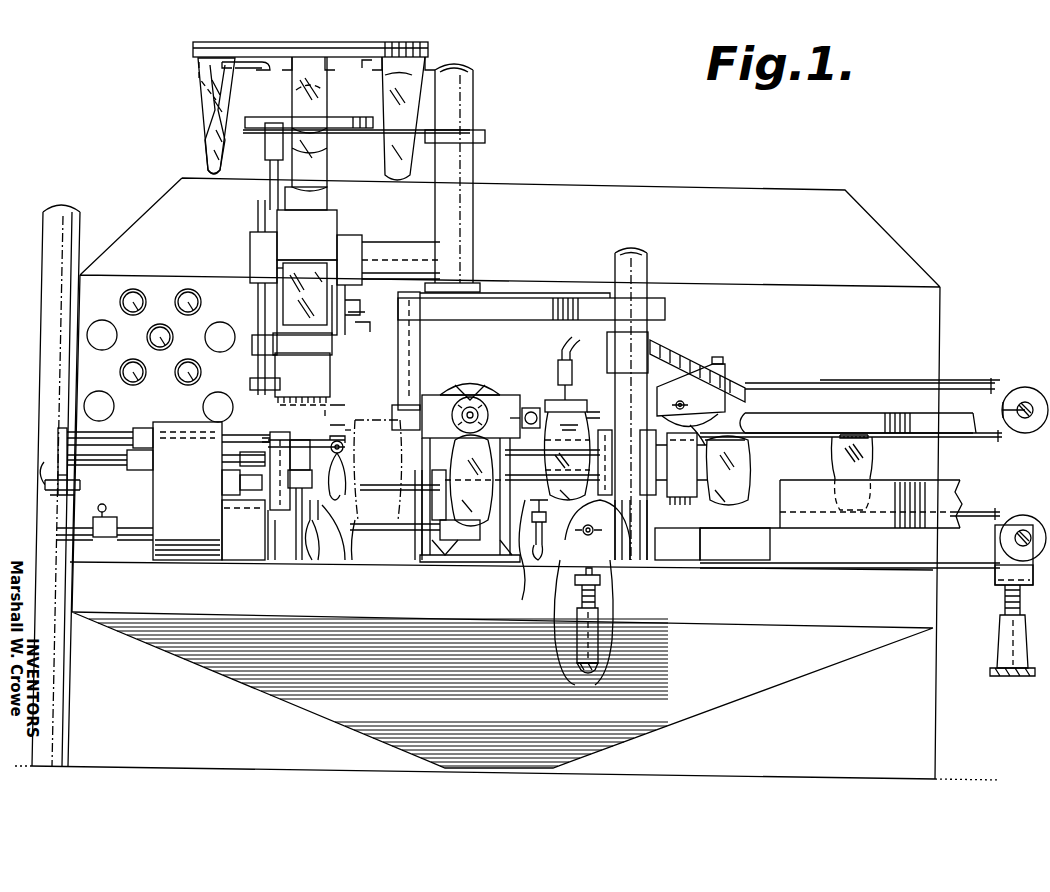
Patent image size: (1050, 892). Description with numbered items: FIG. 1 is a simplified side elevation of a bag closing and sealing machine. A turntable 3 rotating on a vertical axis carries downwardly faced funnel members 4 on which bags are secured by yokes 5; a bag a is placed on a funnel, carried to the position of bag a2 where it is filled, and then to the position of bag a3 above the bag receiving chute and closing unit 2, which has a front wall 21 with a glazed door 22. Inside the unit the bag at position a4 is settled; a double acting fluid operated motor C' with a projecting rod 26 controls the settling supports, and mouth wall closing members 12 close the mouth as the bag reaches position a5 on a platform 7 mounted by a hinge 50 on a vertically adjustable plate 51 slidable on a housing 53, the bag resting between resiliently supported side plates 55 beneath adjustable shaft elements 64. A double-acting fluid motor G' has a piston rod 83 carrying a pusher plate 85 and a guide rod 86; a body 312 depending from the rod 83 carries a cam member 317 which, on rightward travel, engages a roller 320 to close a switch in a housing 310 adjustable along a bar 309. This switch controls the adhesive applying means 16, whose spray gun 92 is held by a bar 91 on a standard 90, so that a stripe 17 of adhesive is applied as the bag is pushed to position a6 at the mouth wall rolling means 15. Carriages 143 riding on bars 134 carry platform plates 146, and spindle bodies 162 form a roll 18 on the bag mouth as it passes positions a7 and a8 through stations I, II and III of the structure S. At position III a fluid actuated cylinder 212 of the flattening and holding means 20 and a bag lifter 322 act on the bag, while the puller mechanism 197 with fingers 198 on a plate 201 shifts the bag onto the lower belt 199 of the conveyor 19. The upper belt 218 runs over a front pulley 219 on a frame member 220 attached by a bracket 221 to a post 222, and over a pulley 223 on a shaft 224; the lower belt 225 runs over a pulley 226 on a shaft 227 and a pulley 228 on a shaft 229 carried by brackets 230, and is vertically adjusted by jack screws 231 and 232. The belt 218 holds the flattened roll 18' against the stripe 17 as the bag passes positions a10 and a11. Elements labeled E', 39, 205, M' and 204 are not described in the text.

The turntable 3 is at (345, 46).
The yokes 5 is at (233, 63).
The funnel members 4 is at (198, 78).
The bag a is at (205, 108).
The filled bag a3 is at (312, 122).
The bag a2 is at (395, 122).
The bag receiving chute and closing unit 2 is at (290, 216).
The front wall 21 is at (322, 228).
The glazed door 22 is at (318, 272).
The bracket E' is at (254, 297).
The bag a4 is at (283, 268).
The double acting fluid operated motor C' is at (388, 260).
The lower block 39 is at (262, 298).
The projecting rod 26 is at (358, 318).
The mouth wall closing members 12 is at (297, 400).
The bag a5 is at (345, 405).
The rightwardly extending bar 91 is at (342, 415).
The housing 53 is at (178, 555).
The guide rod 86 is at (118, 432).
The body 312 is at (58, 452).
The piston rod 83 is at (112, 472).
The cam member 317 is at (45, 482).
The roller 320 is at (104, 508).
The housing 310 is at (82, 552).
The bar 309 is at (128, 538).
The pusher plate 85 is at (230, 455).
The double-acting fluid motor G' is at (217, 484).
The side plates 55 is at (230, 512).
The shaft elements 64 is at (258, 438).
The vertically adjustable plate 51 is at (268, 545).
The hinge 50 is at (290, 560).
The standard 90 is at (328, 505).
The platform 7 is at (330, 570).
The adhesive applying means 16 is at (348, 565).
The station I is at (384, 450).
The spray gun 92 is at (361, 450).
The stripe of adhesive 17 is at (400, 470).
The carriage 143 is at (432, 490).
The bag a6 is at (366, 540).
The platform plate 146 is at (395, 542).
The structure S is at (498, 410).
The station II is at (470, 376).
The mouth wall rolling means 15 is at (478, 395).
The body 162 is at (532, 397).
The flattening and holding means 20 is at (550, 400).
The fluid actuated cylinder 212 is at (570, 384).
The position III is at (591, 422).
The bag a7 is at (460, 532).
The bars 134 is at (445, 555).
The fingers 198 is at (490, 545).
The bag a8 is at (538, 560).
The bag lifter 322 is at (522, 557).
The shaft 227 is at (582, 541).
The pulley 226 is at (597, 534).
The plate 201 is at (625, 535).
The conveyor 19 is at (637, 544).
The post 222 is at (650, 285).
The roll 18 is at (614, 371).
The bracket 221 is at (650, 340).
The pulley supporting frame member 220 is at (665, 365).
The gear box 205 is at (691, 395).
The front pulley 219 is at (692, 427).
The transfer or puller mechanism 197 is at (705, 440).
The motor M' is at (681, 469).
The bag a10 is at (745, 460).
The upper belt 218 is at (830, 386).
The flattened roll 18' is at (851, 416).
The shaft 224 is at (1025, 402).
The pulley 223 is at (1028, 432).
The bag a11 is at (862, 465).
The lower belt 225 is at (765, 518).
The pulley 228 is at (991, 500).
The block 204 is at (688, 544).
The lower belt 199 is at (742, 525).
The shaft 229 is at (1000, 546).
The brackets 230 is at (997, 575).
The jack screw 232 is at (1003, 640).
The jack screw 231 is at (590, 672).